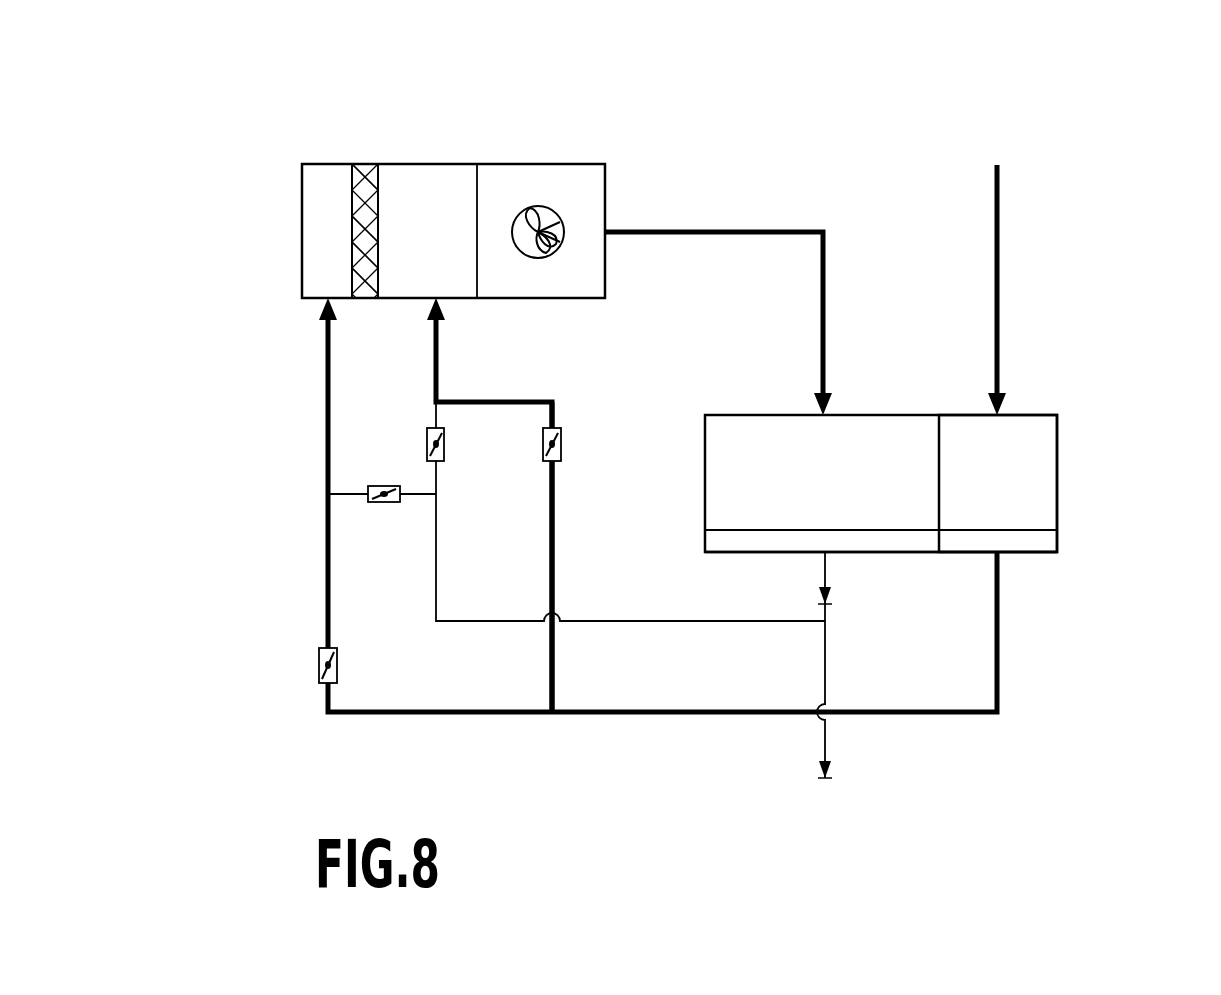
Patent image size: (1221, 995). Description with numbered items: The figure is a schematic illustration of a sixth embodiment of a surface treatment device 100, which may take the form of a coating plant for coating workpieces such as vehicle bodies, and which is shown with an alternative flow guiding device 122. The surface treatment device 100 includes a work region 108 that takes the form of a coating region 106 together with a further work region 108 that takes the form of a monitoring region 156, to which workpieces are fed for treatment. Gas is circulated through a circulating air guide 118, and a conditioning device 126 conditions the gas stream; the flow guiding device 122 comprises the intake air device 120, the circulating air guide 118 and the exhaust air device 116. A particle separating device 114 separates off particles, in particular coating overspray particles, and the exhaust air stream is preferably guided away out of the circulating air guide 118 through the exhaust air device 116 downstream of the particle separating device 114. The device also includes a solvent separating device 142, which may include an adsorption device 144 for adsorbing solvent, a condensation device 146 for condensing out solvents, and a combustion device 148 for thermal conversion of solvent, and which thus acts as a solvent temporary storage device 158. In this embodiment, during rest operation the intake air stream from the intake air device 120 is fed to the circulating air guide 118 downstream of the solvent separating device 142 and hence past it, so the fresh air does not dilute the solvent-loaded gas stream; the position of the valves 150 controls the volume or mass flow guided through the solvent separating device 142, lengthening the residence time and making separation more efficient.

The surface treatment device 100 is at (780, 110).
The coating region 106 is at (782, 438).
The work region 108 is at (967, 435).
The particle separating device 114 is at (874, 545).
The exhaust air device 116 is at (828, 732).
The circulating air guide 118 is at (552, 505).
The intake air device 120 is at (1000, 288).
The flow guiding device 122 is at (890, 134).
The conditioning device 126 is at (510, 148).
The solvent separating device 142 is at (351, 180).
The adsorption device 144 is at (360, 256).
The condensation device 146 is at (355, 268).
The combustion device 148 is at (358, 278).
The valve 150 is at (545, 455).
The monitoring region 156 is at (1010, 445).
The solvent temporary storage device 158 is at (365, 212).